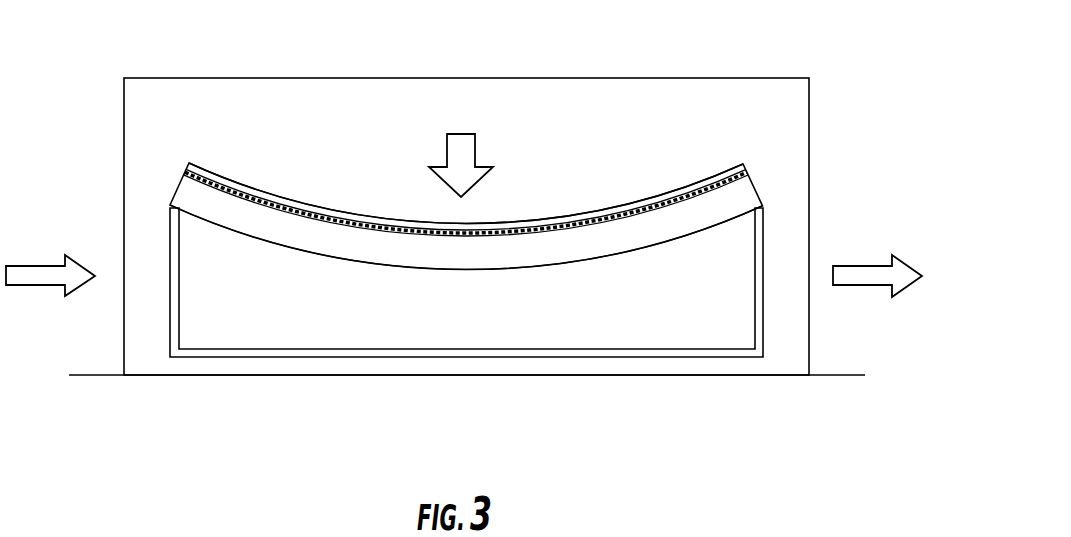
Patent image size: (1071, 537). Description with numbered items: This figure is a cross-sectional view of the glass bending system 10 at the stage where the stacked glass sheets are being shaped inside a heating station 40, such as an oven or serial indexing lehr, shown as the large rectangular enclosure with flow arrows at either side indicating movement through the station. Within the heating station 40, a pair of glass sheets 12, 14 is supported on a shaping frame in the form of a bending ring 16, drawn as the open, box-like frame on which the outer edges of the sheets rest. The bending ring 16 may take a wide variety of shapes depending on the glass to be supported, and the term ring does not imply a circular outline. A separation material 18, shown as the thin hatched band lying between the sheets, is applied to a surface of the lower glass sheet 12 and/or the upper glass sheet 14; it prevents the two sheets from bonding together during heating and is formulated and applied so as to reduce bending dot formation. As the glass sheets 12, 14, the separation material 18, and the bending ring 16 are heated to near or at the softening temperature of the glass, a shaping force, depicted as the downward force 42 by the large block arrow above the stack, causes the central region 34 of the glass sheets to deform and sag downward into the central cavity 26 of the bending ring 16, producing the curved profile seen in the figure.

The system 10 is at (853, 97).
The glass sheet 12 is at (747, 195).
The glass sheet 14 is at (728, 172).
The bending ring 16 is at (763, 292).
The separation material 18 is at (660, 203).
The central cavity 26 is at (543, 320).
The central region 34 is at (471, 290).
The heating station 40 is at (587, 78).
The downward force 42 is at (462, 154).